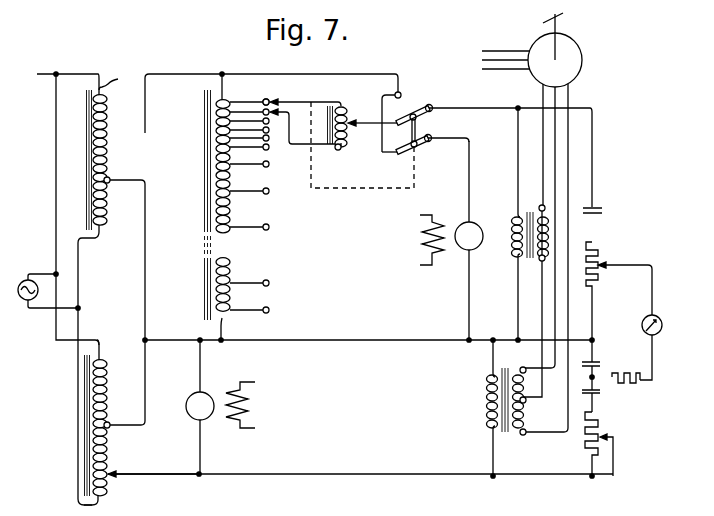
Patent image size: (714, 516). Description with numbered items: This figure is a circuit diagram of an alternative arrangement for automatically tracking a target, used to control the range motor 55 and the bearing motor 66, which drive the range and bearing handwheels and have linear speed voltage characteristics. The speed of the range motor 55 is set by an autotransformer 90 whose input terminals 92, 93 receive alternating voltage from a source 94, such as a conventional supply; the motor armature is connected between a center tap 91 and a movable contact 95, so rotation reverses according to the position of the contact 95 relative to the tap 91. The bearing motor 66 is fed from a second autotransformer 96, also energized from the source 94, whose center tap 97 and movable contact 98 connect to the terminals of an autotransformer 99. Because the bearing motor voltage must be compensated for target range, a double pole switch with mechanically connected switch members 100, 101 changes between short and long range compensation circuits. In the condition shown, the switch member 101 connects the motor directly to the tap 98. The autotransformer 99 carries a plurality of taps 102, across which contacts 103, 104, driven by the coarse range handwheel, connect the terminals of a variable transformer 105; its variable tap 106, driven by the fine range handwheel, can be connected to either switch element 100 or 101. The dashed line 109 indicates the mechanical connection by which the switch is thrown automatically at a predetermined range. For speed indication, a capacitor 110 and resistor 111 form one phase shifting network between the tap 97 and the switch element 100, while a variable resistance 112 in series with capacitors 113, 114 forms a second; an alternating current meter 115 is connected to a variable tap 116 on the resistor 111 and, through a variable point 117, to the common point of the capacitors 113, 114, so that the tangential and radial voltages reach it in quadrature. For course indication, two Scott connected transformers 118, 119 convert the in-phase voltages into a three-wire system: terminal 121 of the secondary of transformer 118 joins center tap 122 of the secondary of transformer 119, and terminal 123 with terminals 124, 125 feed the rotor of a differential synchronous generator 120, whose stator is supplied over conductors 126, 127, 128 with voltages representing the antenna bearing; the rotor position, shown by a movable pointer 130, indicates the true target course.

The range motor 55 is at (188, 398).
The bearing motor 66 is at (478, 247).
The autotransformer 90 is at (108, 368).
The center tap 91 is at (109, 428).
The input terminal 92 is at (95, 335).
The input terminal 93 is at (86, 507).
The alternating current source 94 is at (18, 281).
The movable contact 95 is at (122, 477).
The autotransformer 96 is at (118, 78).
The center tap 97 is at (108, 183).
The movable contact 98 is at (145, 133).
The autotransformer 99 is at (210, 88).
The switch member 100 is at (420, 100).
The switch member 101 is at (421, 150).
The taps 102 is at (263, 99).
The contact 103 is at (288, 94).
The contact 104 is at (282, 120).
The variable transformer 105 is at (340, 151).
The variable tap 106 is at (362, 107).
The dashed line 109 is at (360, 190).
The capacitor 110 is at (603, 212).
The resistor 111 is at (602, 276).
The variable resistance 112 is at (584, 446).
The capacitor 113 is at (586, 396).
The capacitor 114 is at (600, 364).
The alternating current meter 115 is at (660, 332).
The variable tap 116 is at (606, 260).
The variable point 117 is at (628, 384).
The transformer 118 is at (536, 200).
The transformer 119 is at (514, 361).
The differential synchronous generator 120 is at (583, 60).
The terminal 121 is at (540, 261).
The center tap 122 is at (526, 403).
The terminal 123 is at (545, 206).
The terminal 124 is at (524, 366).
The terminal 125 is at (523, 436).
The conductor 126 is at (486, 47).
The conductor 127 is at (482, 60).
The conductor 128 is at (492, 70).
The movable pointer 130 is at (560, 15).